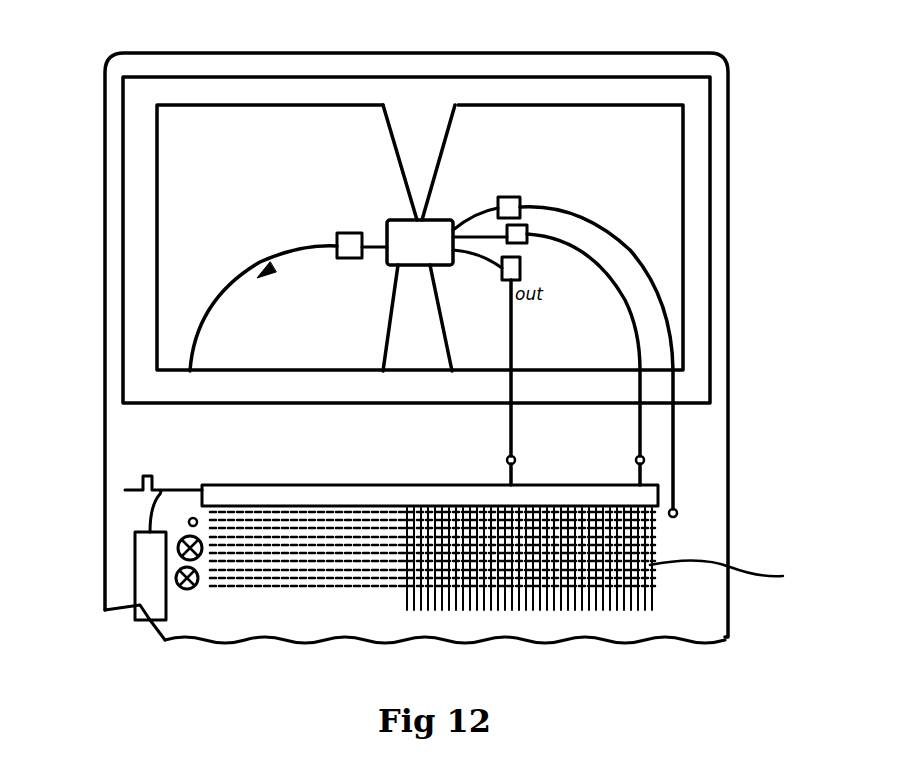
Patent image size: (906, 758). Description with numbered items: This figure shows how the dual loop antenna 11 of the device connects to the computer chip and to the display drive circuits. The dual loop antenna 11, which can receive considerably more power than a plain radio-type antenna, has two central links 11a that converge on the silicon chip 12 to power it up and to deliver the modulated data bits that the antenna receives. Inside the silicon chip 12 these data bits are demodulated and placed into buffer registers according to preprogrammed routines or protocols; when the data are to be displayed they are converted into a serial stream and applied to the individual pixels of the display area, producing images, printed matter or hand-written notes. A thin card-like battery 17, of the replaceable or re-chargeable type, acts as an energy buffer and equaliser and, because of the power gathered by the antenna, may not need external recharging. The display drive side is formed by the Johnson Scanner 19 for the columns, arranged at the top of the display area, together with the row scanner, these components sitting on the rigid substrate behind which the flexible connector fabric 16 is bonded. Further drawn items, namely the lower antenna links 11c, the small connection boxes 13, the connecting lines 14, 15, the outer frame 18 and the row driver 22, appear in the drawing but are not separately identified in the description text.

The dual loop antenna 11 is at (704, 165).
The central links 11a is at (413, 133).
The lower support lines 11c is at (410, 330).
The silicon chip 12 is at (445, 222).
The interface boxes 13 is at (345, 233).
The outer connection line 14 is at (600, 226).
The inner connection line 15 is at (630, 310).
The flexible connector fabric 16 is at (512, 352).
The battery 17 is at (212, 337).
The outer frame 18 is at (728, 432).
The Johnson Scanner 19 is at (660, 500).
The row driver 22 is at (192, 590).